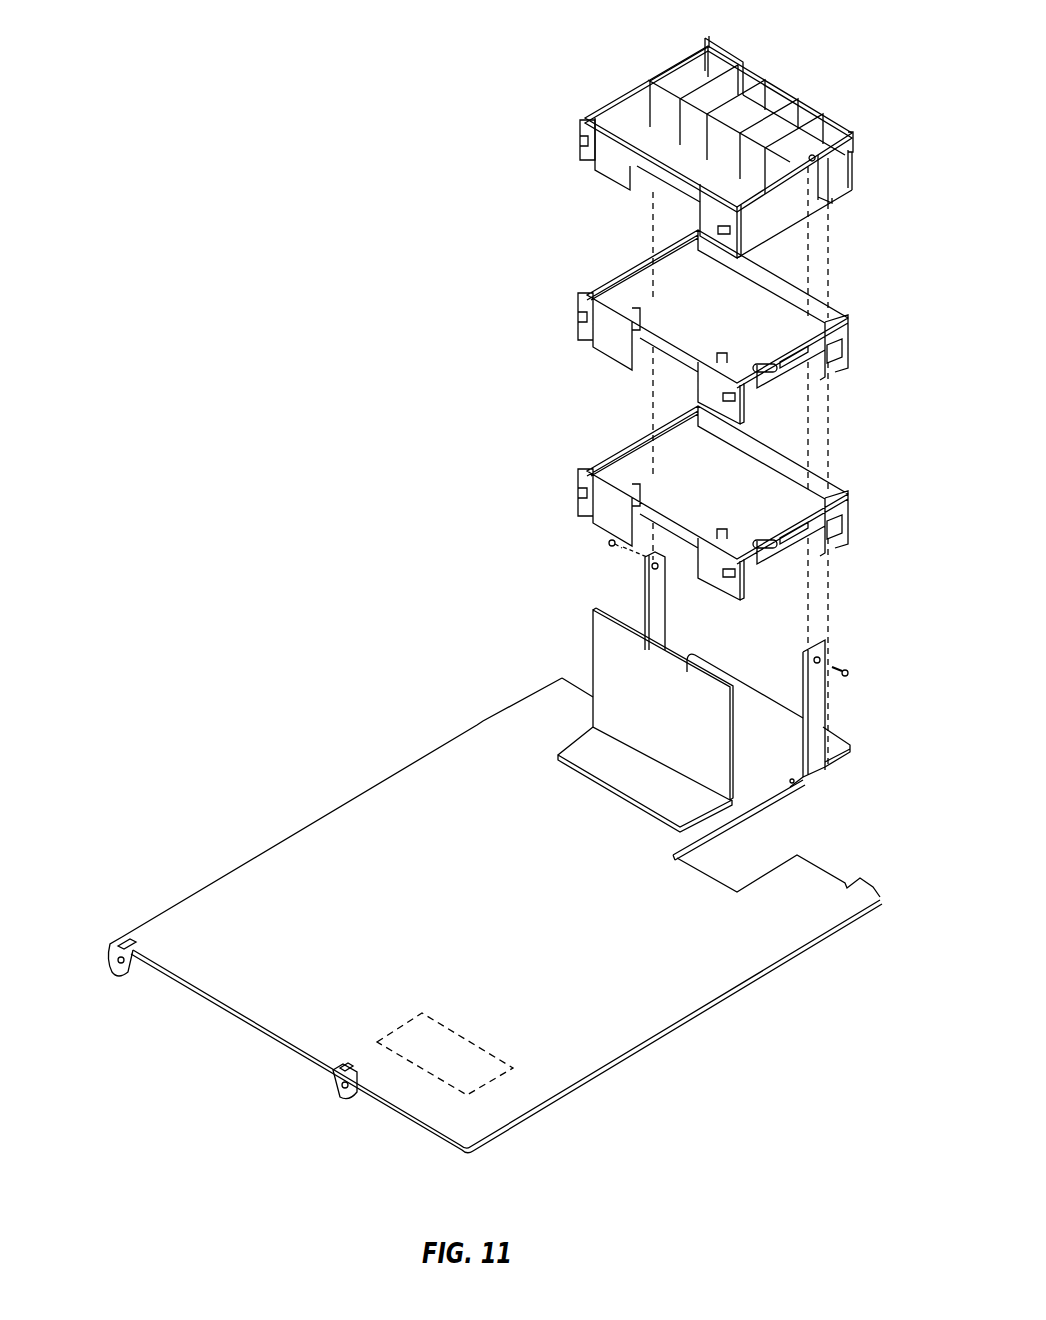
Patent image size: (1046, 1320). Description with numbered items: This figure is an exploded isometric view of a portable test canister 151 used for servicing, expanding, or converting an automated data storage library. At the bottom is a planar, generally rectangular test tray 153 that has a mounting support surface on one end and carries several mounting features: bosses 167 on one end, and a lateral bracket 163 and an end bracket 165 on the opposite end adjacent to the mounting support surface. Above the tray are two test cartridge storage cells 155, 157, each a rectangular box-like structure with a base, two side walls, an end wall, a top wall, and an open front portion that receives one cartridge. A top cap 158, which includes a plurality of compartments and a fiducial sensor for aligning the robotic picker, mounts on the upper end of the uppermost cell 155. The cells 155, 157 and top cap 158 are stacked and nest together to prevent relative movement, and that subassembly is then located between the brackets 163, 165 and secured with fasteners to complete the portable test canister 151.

The portable test canister 151 is at (404, 158).
The test tray 153 is at (287, 836).
The test cartridge storage cell 155 is at (608, 283).
The test cartridge storage cell 157 is at (608, 457).
The top cap 158 is at (608, 104).
The lateral bracket 163 is at (823, 713).
The end bracket 165 is at (600, 666).
The boss 167 is at (108, 958).